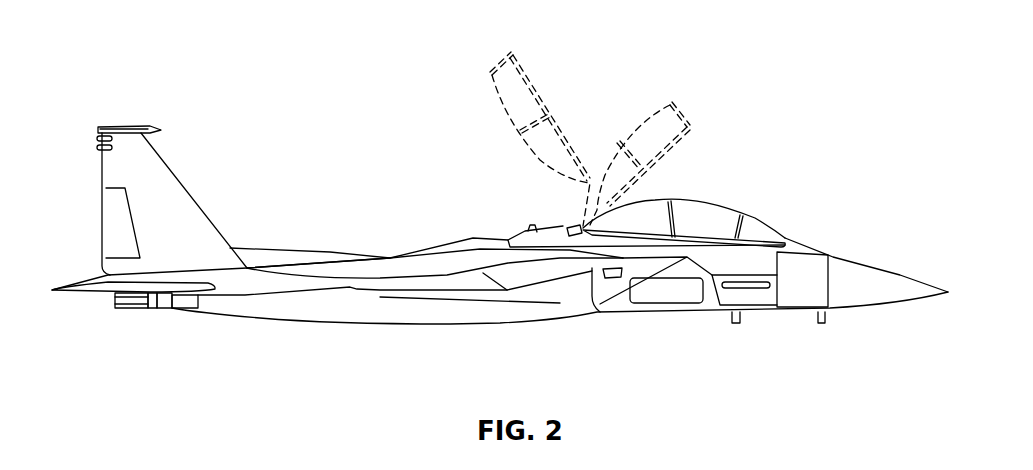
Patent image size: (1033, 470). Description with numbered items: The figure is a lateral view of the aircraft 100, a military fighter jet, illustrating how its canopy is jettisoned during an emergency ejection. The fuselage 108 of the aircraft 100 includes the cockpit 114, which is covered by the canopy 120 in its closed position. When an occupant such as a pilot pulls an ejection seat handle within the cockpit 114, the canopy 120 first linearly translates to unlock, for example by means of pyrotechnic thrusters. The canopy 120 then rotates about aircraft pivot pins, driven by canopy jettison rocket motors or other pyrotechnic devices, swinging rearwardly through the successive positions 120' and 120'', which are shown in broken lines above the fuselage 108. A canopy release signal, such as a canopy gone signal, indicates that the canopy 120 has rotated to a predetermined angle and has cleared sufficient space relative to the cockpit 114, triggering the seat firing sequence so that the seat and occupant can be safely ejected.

The aircraft 100 is at (102, 92).
The fuselage 108 is at (560, 226).
The cockpit 114 is at (727, 214).
The canopy 120 is at (684, 191).
The canopy position 120' is at (640, 141).
The canopy position 120'' is at (515, 123).